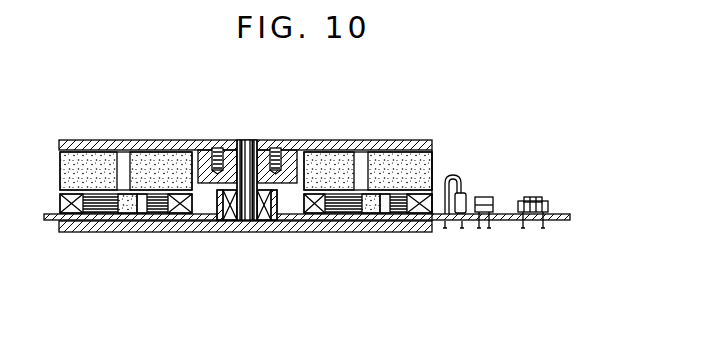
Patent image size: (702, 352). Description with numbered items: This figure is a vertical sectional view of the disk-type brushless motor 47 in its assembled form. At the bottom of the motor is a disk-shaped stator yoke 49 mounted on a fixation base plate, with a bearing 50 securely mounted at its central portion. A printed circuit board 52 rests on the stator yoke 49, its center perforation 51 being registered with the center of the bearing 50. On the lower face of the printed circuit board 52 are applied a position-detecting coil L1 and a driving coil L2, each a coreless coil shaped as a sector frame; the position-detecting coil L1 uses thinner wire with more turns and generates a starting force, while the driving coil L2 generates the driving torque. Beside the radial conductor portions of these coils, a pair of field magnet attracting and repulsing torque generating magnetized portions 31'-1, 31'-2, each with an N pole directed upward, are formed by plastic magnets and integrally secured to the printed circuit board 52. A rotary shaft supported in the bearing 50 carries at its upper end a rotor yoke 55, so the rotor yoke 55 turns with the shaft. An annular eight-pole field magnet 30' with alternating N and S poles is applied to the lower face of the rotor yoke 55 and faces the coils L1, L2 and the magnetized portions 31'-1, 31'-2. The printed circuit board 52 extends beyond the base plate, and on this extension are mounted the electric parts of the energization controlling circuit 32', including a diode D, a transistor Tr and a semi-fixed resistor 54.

The disk-type brushless motor 47 is at (331, 140).
The rotor yoke 55 is at (390, 143).
The field magnet 30' is at (466, 155).
The energization controlling circuit 32' is at (532, 176).
The diode D is at (466, 198).
The transistor Tr is at (495, 200).
The semi-fixed resistor 54 is at (550, 205).
The printed circuit board 52 is at (510, 221).
The position-detecting coil L1 is at (305, 219).
The driving coil L2 is at (67, 233).
The field magnet attracting and repulsing torque generating magnetized portion 31'-1 is at (408, 249).
The field magnet attracting and repulsing torque generating magnetized portion 31'-2 is at (127, 248).
The stator yoke 49 is at (350, 221).
The bearing 50 is at (237, 221).
The center perforation 51 is at (205, 219).